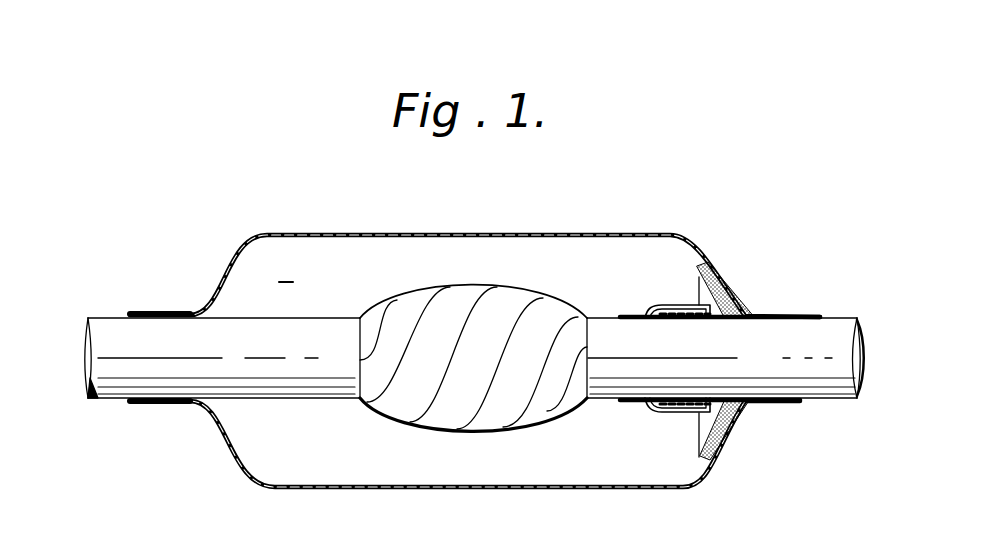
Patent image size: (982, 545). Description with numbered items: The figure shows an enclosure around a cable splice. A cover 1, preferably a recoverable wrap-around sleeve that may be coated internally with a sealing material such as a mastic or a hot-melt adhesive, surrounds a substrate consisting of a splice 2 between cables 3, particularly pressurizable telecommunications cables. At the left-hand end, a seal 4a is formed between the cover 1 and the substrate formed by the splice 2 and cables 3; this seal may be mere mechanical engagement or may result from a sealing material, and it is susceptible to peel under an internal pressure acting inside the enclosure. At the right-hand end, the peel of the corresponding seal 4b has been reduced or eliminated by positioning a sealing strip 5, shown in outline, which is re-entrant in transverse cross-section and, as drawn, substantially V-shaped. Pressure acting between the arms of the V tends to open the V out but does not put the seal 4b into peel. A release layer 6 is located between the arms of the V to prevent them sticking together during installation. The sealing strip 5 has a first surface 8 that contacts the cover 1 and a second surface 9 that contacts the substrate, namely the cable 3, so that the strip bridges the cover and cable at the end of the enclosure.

The cover 1 is at (264, 233).
The splice 2 is at (468, 284).
The cables 3 is at (170, 368).
The seal 4a is at (142, 313).
The seal 4b is at (745, 313).
The sealing strip 5 is at (694, 276).
The release layer 6 is at (652, 307).
The first surface of the sealing strip 8 is at (705, 446).
The second surface 9 is at (677, 408).